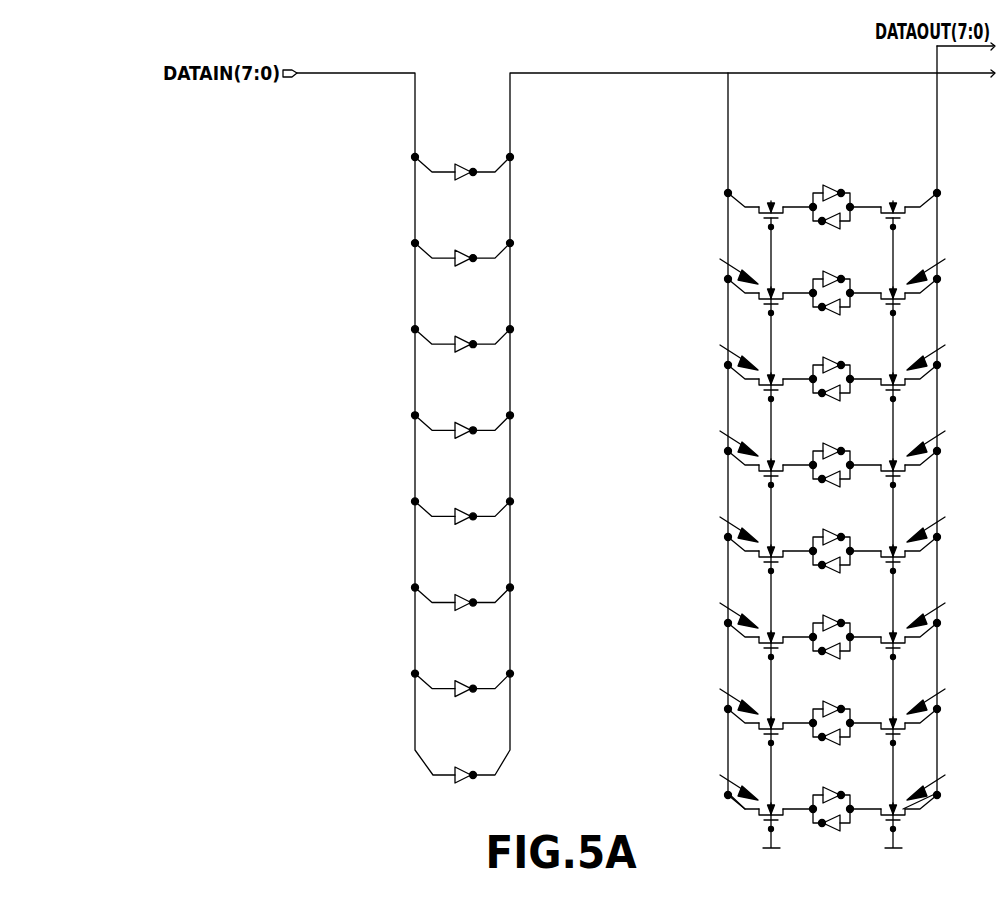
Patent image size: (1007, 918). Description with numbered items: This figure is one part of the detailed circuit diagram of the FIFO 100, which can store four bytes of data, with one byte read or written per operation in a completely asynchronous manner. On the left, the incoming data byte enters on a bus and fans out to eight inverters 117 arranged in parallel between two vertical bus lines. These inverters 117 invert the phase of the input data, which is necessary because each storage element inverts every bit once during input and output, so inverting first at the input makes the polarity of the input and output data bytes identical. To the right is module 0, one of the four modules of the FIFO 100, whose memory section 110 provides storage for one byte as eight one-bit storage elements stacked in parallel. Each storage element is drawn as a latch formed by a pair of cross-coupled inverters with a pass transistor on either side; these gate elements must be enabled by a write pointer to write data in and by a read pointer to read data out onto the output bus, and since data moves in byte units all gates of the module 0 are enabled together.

The FIFO 100 is at (93, 340).
The memory section 110 is at (708, 313).
The inverters 117 is at (406, 160).
The module 0 is at (817, 58).